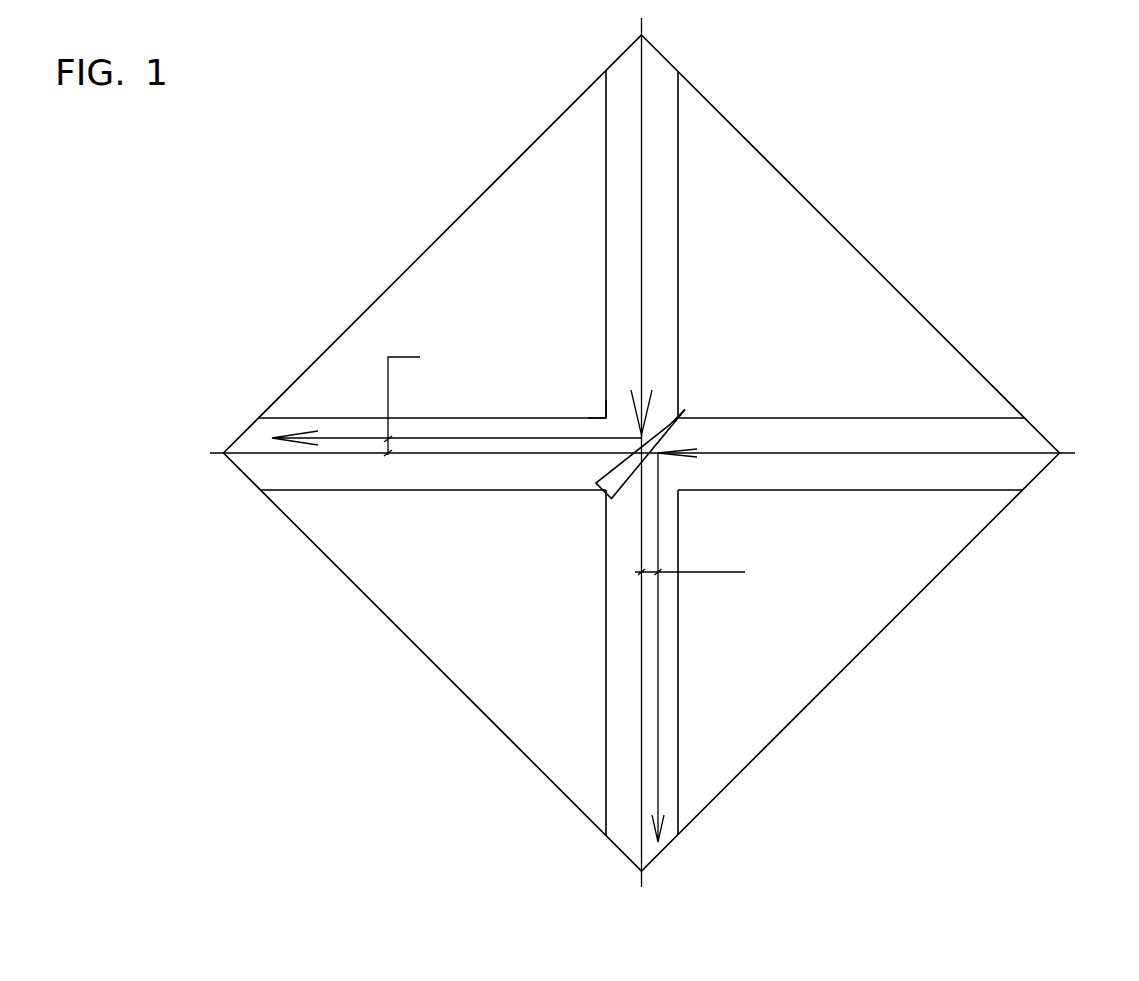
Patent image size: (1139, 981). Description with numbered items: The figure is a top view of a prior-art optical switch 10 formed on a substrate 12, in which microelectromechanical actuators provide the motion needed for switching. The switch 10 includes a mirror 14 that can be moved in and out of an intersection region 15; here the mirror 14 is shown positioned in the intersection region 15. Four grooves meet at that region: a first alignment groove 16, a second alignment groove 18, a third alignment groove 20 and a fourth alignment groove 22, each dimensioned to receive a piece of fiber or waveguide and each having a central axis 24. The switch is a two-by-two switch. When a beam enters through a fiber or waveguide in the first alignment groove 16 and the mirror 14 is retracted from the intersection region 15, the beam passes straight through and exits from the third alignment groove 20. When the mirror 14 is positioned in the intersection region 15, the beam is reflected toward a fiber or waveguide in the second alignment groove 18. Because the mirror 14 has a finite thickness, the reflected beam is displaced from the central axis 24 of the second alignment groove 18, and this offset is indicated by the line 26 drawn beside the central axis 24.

The switch 10 is at (1058, 235).
The substrate 12 is at (766, 235).
The mirror 14 is at (672, 418).
The intersection region 15 is at (612, 427).
The first alignment groove 16 is at (877, 417).
The second alignment groove 18 is at (682, 725).
The third alignment groove 20 is at (327, 493).
The fourth alignment groove 22 is at (605, 153).
The central axis 24 is at (643, 83).
The line 26 is at (362, 438).